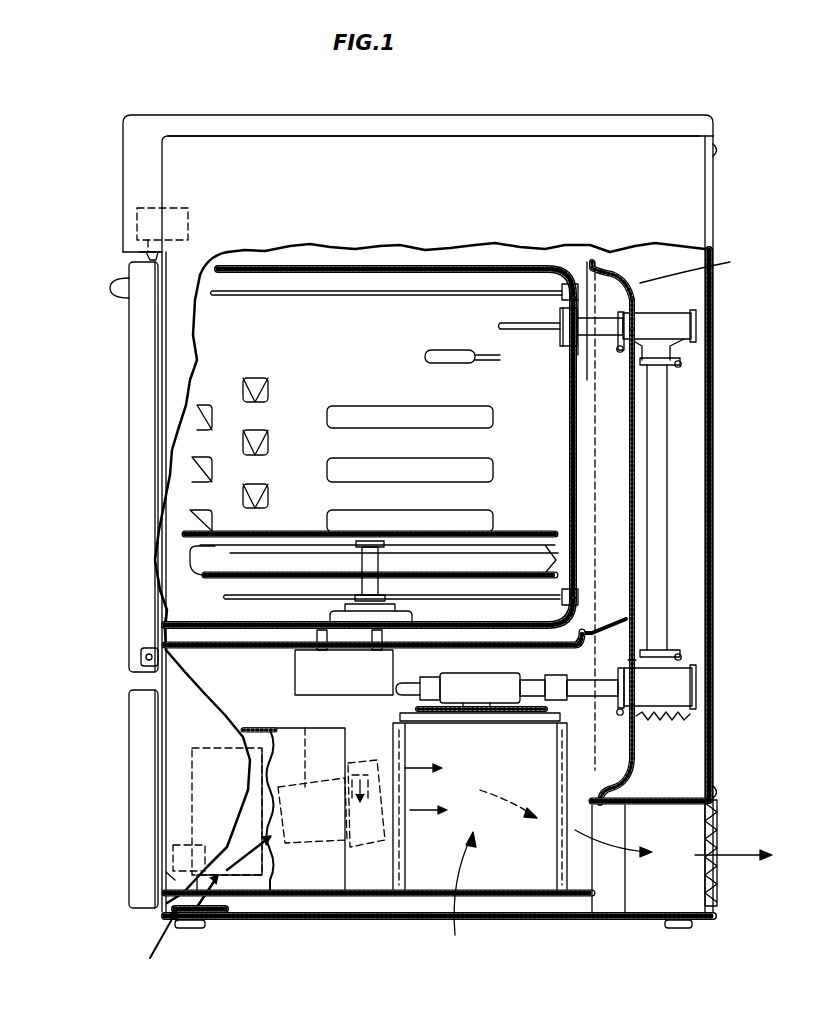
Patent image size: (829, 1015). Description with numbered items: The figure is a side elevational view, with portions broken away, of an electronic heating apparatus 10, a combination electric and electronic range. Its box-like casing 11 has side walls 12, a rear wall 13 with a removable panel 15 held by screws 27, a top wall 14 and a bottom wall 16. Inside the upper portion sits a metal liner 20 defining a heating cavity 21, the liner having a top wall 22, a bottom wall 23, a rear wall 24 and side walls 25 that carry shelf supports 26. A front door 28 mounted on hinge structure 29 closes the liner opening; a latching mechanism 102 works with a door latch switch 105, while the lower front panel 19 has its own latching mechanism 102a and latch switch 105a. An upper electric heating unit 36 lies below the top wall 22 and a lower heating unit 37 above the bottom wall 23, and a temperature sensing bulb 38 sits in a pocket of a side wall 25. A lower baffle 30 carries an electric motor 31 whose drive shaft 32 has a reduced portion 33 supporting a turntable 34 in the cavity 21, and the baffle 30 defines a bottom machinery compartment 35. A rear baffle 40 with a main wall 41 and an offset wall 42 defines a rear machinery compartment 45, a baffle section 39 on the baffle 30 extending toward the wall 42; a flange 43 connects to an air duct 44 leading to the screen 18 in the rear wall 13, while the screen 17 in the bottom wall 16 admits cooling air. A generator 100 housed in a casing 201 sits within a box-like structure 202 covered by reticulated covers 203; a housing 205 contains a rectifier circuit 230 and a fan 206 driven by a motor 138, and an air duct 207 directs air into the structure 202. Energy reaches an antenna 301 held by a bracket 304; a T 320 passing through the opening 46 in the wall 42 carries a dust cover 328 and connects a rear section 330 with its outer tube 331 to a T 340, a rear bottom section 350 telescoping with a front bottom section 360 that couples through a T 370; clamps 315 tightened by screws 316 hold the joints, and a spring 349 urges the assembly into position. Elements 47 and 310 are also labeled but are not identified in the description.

The electronic heating apparatus 10 is at (96, 122).
The casing 11 is at (694, 192).
The side walls 12 is at (434, 169).
The rear wall 13 is at (713, 540).
The top wall 14 is at (356, 116).
The removable panel 15 is at (700, 352).
The bottom wall 16 is at (330, 922).
The screen 17 is at (187, 934).
The screen 18 is at (718, 840).
The lower front panel 19 is at (128, 812).
The metal liner 20 is at (448, 262).
The heating cavity 21 is at (215, 353).
The top wall 22 is at (362, 268).
The bottom wall 23 is at (540, 621).
The rear wall 24 is at (568, 426).
The side walls 25 is at (276, 485).
The shelf supports 26 is at (336, 410).
The screws 27 is at (716, 151).
The front door 28 is at (128, 566).
The hinge structure 29 is at (140, 668).
The lower baffle 30 is at (229, 649).
The electric motor 31 is at (295, 683).
The output drive shaft 32 is at (352, 640).
The reduced portion 33 is at (379, 578).
The turntable 34 is at (300, 532).
The bottom machinery compartment 35 is at (240, 714).
The electric heating unit 36 is at (331, 297).
The electric heating unit 37 is at (270, 599).
The temperature sensing bulb 38 is at (441, 357).
The baffle section 39 is at (608, 628).
The rear baffle 40 is at (640, 283).
The main wall 41 is at (606, 266).
The rearwardly offset wall 42 is at (638, 476).
The flange 43 is at (608, 921).
The air duct 44 is at (661, 797).
The rear machinery compartment 45 is at (692, 416).
The opening 46 is at (637, 318).
The duct branch 47 is at (634, 672).
The generator 100 is at (443, 891).
The latching mechanism 102 is at (138, 256).
The latching mechanism 102a is at (165, 874).
The door latch switch 105 is at (135, 224).
The door latch switch 105a is at (172, 848).
The motor 138 is at (295, 810).
The casing 201 is at (401, 723).
The box-like structure 202 is at (528, 800).
The reticulated metal covers 203 is at (399, 742).
The open ended housing 205 is at (271, 731).
The fan 206 is at (372, 793).
The air duct 207 is at (314, 937).
The voltage doubler and rectifier circuit 230 is at (246, 752).
The antenna 301 is at (520, 325).
The bracket 304 is at (560, 341).
The valve body 310 is at (580, 350).
The clamp 315 is at (620, 340).
The screw 316 is at (682, 364).
The T 320 is at (690, 316).
The dust cover 328 is at (698, 322).
The rear section 330 is at (682, 497).
The outer tube 331 is at (668, 525).
The T 340 is at (700, 681).
The spring 349 is at (694, 714).
The rear bottom section 350 is at (560, 702).
The front bottom transmission line section 360 is at (530, 686).
The T 370 is at (446, 681).